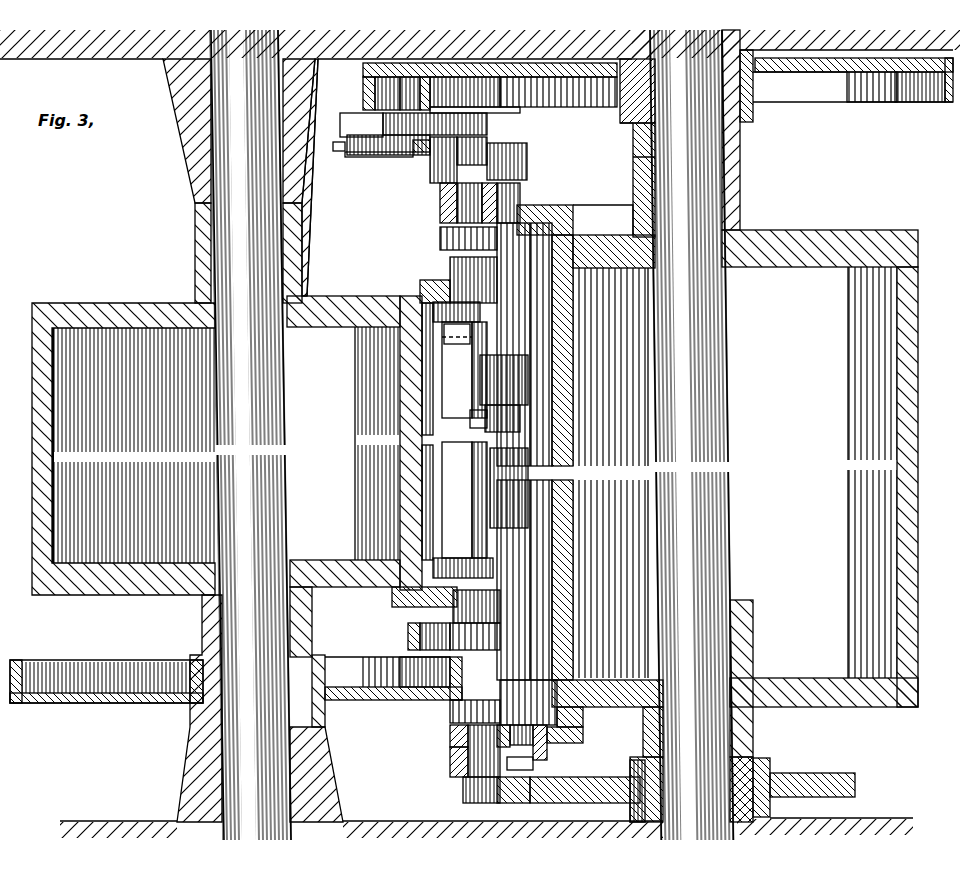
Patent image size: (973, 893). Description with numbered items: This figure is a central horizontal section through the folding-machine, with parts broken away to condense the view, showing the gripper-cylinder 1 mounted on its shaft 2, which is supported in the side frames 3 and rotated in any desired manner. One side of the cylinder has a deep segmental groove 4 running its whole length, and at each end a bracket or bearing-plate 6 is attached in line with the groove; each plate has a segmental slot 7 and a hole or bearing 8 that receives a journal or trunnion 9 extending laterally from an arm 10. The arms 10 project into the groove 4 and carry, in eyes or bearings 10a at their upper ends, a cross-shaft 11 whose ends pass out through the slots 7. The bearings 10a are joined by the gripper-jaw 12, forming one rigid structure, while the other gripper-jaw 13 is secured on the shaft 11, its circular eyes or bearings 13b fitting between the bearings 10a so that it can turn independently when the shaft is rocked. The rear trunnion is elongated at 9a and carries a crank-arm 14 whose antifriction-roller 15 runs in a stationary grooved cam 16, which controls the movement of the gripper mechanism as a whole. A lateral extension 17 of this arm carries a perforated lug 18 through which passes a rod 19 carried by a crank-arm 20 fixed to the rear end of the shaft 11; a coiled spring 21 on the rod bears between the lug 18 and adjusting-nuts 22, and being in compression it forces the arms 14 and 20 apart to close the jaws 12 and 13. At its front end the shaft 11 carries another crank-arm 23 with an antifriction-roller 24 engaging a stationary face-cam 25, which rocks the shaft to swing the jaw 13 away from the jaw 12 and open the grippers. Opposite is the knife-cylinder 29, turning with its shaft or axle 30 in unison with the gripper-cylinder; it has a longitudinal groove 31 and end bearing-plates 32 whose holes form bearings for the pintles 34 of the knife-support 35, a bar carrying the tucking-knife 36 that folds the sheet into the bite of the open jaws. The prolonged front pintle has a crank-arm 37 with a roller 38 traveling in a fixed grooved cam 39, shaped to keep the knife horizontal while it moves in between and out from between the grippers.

The gripper-cylinder 1 is at (833, 707).
The shaft 2 is at (729, 591).
The side frames 3 is at (877, 817).
The segmental groove 4 is at (540, 245).
The bracket or bearing-plate 6 is at (574, 208).
The segmental slot 7 is at (548, 747).
The hole or bearing 8 is at (450, 740).
The journal or trunnion 9 is at (440, 205).
The elongated trunnion portion 9a is at (457, 108).
The arm 10 is at (440, 240).
The eyes or bearings 10a is at (532, 315).
The cross-shaft 11 is at (507, 193).
The gripper-jaw 12 is at (478, 392).
The gripper-jaw 13 is at (505, 428).
The circular eyes or bearings 13b is at (520, 375).
The crank-arm 14 is at (480, 125).
The antifriction-roller 15 is at (388, 90).
The grooved cam 16 is at (372, 92).
The lateral extension 17 is at (353, 123).
The lug 18 is at (345, 158).
The rod 19 is at (334, 148).
The crank-arm 20 is at (515, 170).
The coiled spring 21 is at (386, 160).
The adjusting-nuts 22 is at (423, 156).
The crank-arm 23 is at (533, 765).
The antifriction-roller 24 is at (465, 795).
The face-cam 25 is at (507, 797).
The knife-cylinder 29 is at (32, 402).
The shaft or axle 30 is at (287, 372).
The longitudinal groove 31 is at (432, 480).
The bearing-plate or bracket 32 is at (395, 284).
The trunnion or pintle 34 is at (450, 266).
The knife-support 35 is at (457, 354).
The tucking-knife 36 is at (478, 424).
The crank-arm 37 is at (418, 636).
The roller 38 is at (410, 660).
The grooved cam 39 is at (127, 703).